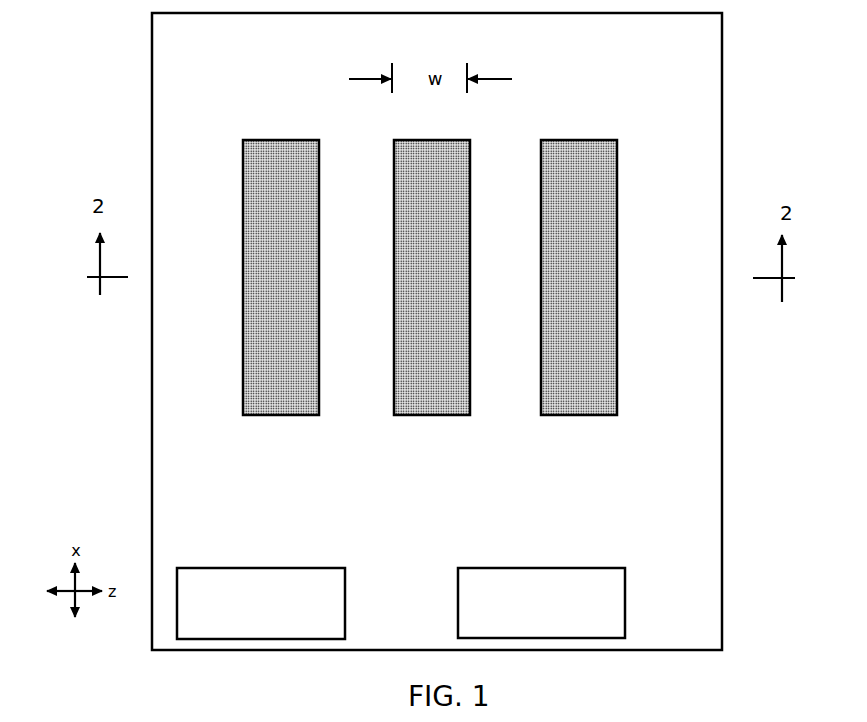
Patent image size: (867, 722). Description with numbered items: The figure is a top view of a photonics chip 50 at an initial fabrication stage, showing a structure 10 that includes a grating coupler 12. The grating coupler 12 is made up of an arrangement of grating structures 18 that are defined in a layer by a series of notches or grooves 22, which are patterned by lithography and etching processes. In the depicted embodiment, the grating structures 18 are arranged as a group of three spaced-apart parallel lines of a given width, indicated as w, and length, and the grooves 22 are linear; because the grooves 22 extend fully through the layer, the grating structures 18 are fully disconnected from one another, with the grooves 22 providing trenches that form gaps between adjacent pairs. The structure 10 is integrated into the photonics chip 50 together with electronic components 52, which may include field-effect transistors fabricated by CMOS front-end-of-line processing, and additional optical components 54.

The photonics chip 50 is at (148, 70).
The structure 10 is at (240, 88).
The grating coupler 12 is at (623, 123).
The grating structures 18 is at (273, 388).
The grooves 22 is at (192, 452).
The optical components 54 is at (345, 608).
The electronic components 52 is at (625, 600).